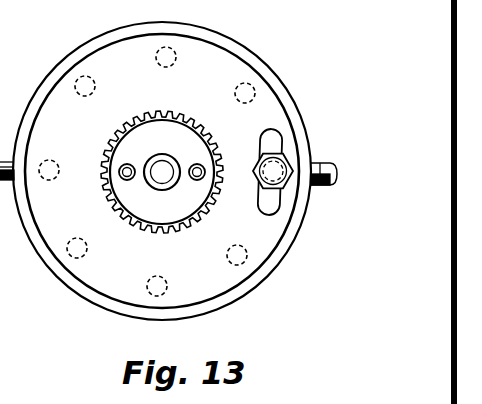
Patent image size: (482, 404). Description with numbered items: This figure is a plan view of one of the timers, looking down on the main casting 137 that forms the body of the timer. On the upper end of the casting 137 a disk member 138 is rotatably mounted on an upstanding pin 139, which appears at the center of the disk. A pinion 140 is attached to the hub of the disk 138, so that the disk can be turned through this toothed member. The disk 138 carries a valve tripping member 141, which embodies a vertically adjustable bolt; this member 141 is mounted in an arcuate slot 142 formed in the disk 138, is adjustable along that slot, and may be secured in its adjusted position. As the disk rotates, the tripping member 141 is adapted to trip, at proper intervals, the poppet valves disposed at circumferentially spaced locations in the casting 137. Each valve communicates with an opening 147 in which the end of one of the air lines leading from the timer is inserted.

The main casting 137 is at (54, 277).
The disk member 138 is at (88, 287).
The upstanding pin 139 is at (162, 170).
The pinion 140 is at (158, 223).
The valve tripping member 141 is at (258, 185).
The arcuate slot 142 is at (272, 143).
The opening 147 is at (318, 187).